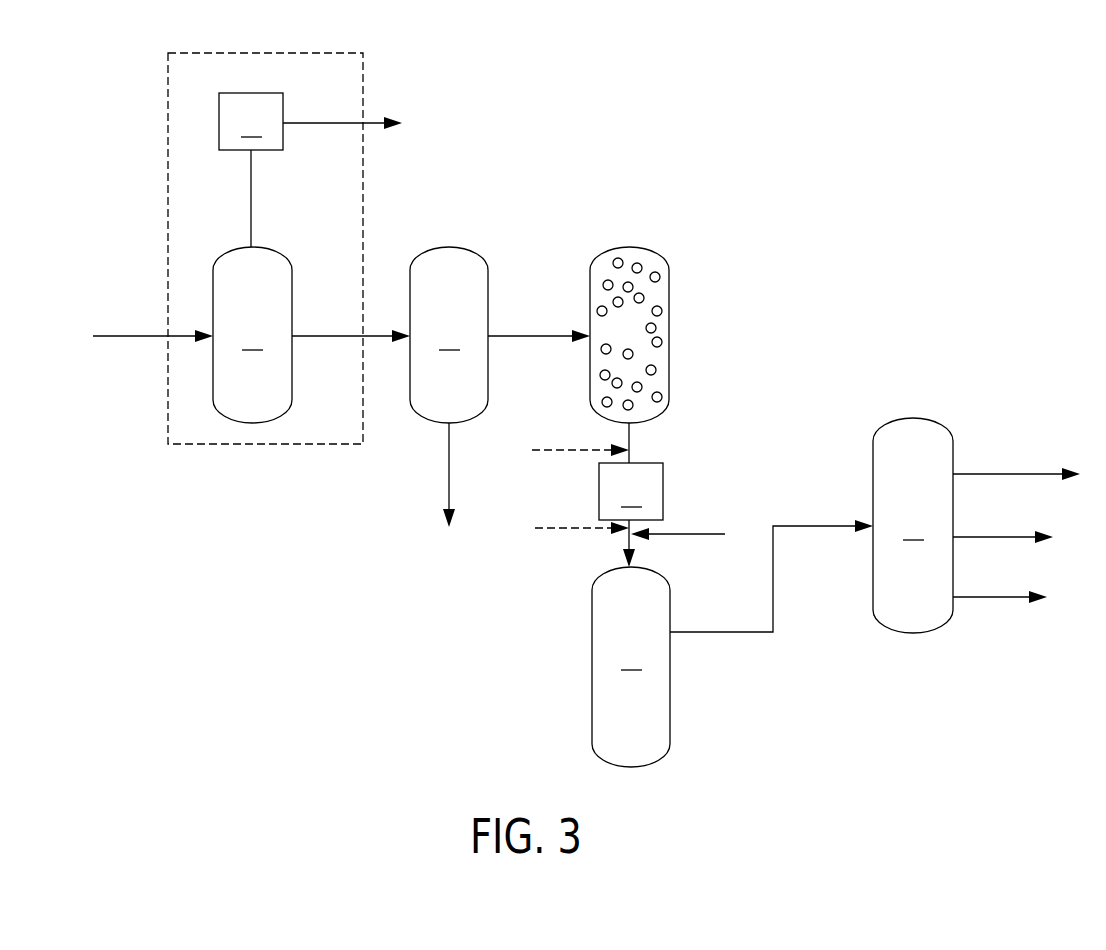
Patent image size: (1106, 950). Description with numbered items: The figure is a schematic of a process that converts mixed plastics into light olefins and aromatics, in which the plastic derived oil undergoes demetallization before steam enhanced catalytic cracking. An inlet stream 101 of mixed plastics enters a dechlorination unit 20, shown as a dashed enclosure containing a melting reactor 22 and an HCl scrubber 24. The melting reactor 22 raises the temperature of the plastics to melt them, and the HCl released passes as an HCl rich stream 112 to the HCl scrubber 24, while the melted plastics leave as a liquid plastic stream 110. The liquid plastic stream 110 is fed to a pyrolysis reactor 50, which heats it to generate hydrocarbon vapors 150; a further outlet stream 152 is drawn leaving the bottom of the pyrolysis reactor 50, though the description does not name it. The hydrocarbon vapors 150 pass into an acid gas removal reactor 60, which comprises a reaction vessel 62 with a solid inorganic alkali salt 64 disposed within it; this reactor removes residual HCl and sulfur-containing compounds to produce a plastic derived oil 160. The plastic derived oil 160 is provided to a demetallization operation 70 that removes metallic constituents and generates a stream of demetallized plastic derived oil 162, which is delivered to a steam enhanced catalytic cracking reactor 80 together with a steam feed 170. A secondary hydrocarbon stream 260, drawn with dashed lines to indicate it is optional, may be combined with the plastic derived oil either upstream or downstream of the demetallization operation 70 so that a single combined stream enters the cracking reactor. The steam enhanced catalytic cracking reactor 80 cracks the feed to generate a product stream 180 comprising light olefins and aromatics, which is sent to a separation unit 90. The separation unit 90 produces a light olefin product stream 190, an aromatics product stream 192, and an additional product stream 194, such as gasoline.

The dechlorination unit 20 is at (215, 450).
The melting reactor 22 is at (252, 335).
The HCl scrubber 24 is at (310, 121).
The pyrolysis reactor 50 is at (449, 335).
The acid gas removal reactor 60 is at (655, 303).
The reaction vessel 62 is at (617, 247).
The solid inorganic alkali salt 64 is at (656, 373).
The demetallization operation 70 is at (631, 491).
The steam enhanced catalytic cracking reactor 80 is at (631, 667).
The separation unit 90 is at (913, 525).
The inlet stream 101 is at (122, 334).
The liquid plastic stream 110 is at (375, 332).
The HCl rich stream 112 is at (253, 208).
The hydrocarbon vapors 150 is at (532, 333).
The bottoms stream 152 is at (445, 483).
The plastic derived oil 160 is at (633, 433).
The demetallized plastic derived oil 162 is at (625, 540).
The steam feed 170 is at (697, 537).
The product stream 180 is at (748, 636).
The light olefin product stream 190 is at (980, 470).
The aromatics product stream 192 is at (1015, 535).
The additional product stream 194 is at (1003, 600).
The secondary hydrocarbon stream 260 is at (558, 447).